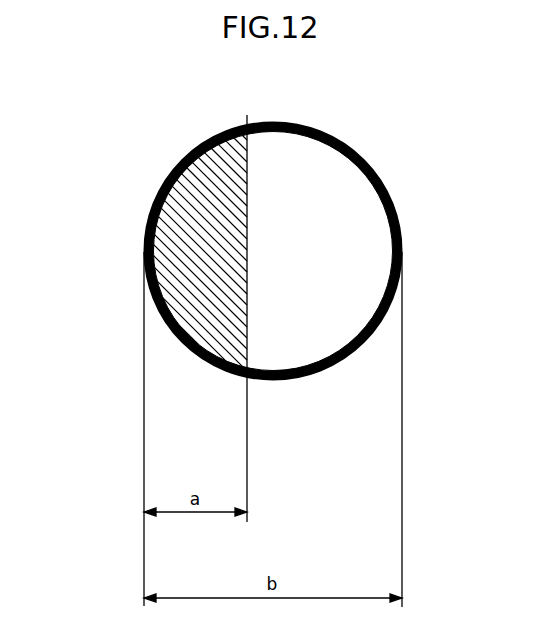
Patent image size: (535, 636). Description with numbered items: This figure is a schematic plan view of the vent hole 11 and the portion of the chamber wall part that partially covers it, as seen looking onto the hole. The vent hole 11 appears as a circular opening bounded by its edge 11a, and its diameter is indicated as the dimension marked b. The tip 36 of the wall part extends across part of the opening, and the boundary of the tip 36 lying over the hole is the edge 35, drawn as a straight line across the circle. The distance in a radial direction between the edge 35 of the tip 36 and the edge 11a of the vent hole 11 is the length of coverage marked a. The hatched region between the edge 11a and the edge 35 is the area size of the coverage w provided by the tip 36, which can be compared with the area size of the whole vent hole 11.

The vent hole 11 is at (387, 188).
The edge of the vent hole 11a is at (152, 240).
The edge of the tip 35 is at (247, 335).
The tip of the wall part 36 is at (190, 308).
The area size of the coverage w is at (209, 163).